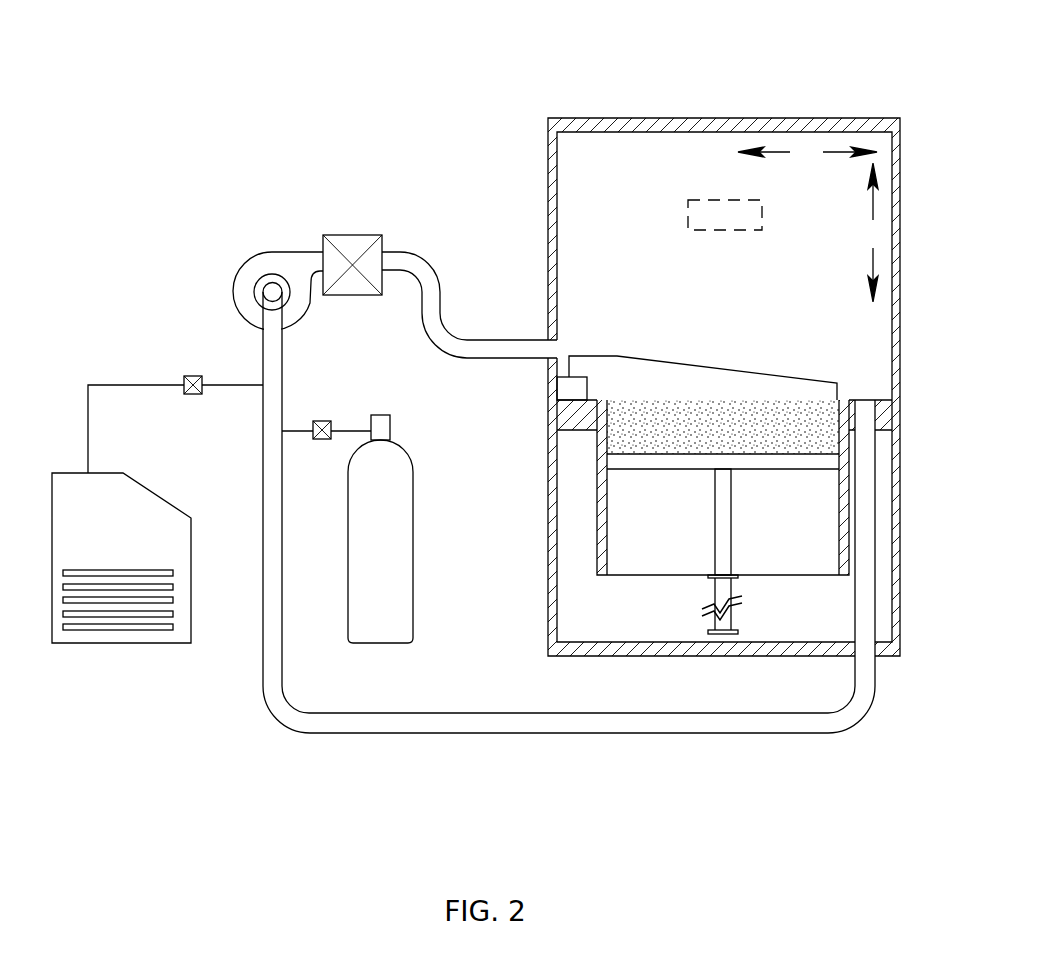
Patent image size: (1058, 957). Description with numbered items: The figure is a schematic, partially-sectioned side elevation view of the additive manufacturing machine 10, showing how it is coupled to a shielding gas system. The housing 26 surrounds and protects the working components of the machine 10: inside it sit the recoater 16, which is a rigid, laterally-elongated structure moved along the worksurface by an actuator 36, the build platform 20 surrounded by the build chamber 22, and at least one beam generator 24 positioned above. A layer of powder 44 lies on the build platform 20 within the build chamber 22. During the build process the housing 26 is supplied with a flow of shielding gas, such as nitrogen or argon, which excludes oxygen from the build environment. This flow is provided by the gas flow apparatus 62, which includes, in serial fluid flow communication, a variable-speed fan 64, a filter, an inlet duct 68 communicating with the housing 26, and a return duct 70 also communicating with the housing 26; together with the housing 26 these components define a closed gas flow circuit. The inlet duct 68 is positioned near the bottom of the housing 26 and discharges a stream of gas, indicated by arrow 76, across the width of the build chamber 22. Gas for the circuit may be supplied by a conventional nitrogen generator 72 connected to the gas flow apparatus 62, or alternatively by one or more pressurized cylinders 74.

The machine 10 is at (690, 58).
The recoater 16 is at (618, 396).
The build platform 20 is at (668, 460).
The build chamber 22 is at (845, 545).
The beam generator 24 is at (708, 193).
The housing 26 is at (895, 181).
The actuator 36 is at (572, 391).
The powder bed 44 is at (708, 443).
The gas flow apparatus 62 is at (205, 252).
The variable-speed fan 64 is at (365, 235).
The inlet duct 68 is at (423, 271).
The return duct 70 is at (741, 722).
The nitrogen generator 72 is at (94, 543).
The pressurized cylinder 74 is at (371, 525).
The arrow 76 is at (542, 350).